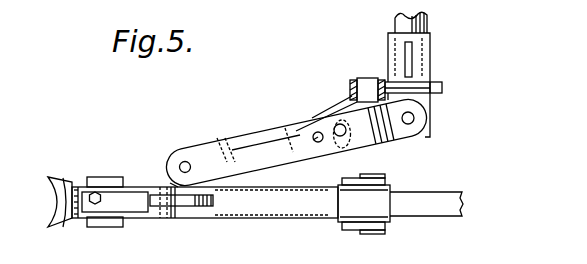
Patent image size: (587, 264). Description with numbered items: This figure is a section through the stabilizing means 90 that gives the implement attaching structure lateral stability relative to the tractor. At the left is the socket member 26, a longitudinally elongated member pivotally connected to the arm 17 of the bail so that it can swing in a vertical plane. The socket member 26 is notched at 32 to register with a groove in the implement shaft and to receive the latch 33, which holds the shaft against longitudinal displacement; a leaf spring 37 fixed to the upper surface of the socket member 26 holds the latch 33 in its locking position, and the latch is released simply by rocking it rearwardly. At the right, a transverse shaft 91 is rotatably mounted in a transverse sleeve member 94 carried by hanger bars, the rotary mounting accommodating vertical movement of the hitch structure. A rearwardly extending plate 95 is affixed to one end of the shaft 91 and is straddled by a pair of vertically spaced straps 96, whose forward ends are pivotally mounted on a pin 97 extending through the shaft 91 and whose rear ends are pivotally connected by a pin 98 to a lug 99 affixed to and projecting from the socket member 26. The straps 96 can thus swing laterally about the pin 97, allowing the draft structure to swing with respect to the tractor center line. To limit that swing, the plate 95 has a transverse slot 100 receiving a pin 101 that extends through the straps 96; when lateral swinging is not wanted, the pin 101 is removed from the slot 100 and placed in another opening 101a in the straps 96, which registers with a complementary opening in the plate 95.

The arm 17 is at (445, 191).
The socket member 26 is at (52, 178).
The leaf spring 37 is at (124, 196).
The notch 32 is at (190, 207).
The latch 33 is at (210, 204).
The stabilizing means 90 is at (260, 124).
The transverse shaft 91 is at (420, 24).
The transverse sleeve member 94 is at (422, 52).
The rearwardly extending plate 95 is at (342, 154).
The straps 96 is at (233, 140).
The pin 97 is at (414, 118).
The pin 98 is at (186, 162).
The lug 99 is at (166, 183).
The transverse slot 100 is at (360, 150).
The pin 101 is at (333, 122).
The opening 101a is at (259, 153).